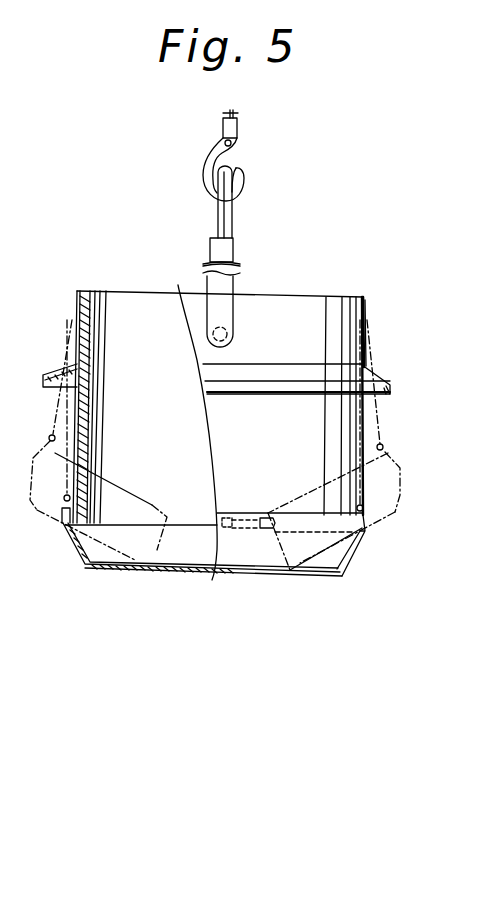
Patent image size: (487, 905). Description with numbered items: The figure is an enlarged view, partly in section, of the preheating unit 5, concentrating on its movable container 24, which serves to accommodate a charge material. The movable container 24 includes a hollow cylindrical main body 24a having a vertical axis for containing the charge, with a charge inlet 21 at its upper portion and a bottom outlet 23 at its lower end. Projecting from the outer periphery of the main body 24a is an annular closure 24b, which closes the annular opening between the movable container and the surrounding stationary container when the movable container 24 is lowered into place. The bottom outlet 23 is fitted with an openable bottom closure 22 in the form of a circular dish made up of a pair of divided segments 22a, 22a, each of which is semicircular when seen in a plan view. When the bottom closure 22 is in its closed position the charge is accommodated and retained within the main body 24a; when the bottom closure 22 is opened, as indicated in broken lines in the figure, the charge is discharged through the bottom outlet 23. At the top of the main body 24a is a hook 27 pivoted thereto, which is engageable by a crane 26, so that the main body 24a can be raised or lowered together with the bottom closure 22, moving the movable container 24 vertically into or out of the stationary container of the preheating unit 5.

The preheating unit 5 is at (372, 311).
The charge inlet 21 is at (95, 307).
The bottom closure 22 is at (93, 568).
The divided segment 22a is at (400, 494).
The bottom outlet 23 is at (185, 520).
The movable container 24 is at (307, 302).
The main body 24a is at (362, 340).
The annular closure 24b is at (381, 385).
The crane 26 is at (234, 132).
The hook 27 is at (237, 218).